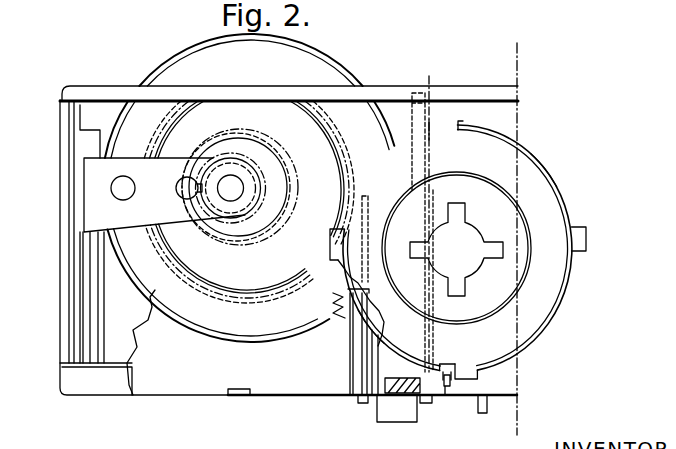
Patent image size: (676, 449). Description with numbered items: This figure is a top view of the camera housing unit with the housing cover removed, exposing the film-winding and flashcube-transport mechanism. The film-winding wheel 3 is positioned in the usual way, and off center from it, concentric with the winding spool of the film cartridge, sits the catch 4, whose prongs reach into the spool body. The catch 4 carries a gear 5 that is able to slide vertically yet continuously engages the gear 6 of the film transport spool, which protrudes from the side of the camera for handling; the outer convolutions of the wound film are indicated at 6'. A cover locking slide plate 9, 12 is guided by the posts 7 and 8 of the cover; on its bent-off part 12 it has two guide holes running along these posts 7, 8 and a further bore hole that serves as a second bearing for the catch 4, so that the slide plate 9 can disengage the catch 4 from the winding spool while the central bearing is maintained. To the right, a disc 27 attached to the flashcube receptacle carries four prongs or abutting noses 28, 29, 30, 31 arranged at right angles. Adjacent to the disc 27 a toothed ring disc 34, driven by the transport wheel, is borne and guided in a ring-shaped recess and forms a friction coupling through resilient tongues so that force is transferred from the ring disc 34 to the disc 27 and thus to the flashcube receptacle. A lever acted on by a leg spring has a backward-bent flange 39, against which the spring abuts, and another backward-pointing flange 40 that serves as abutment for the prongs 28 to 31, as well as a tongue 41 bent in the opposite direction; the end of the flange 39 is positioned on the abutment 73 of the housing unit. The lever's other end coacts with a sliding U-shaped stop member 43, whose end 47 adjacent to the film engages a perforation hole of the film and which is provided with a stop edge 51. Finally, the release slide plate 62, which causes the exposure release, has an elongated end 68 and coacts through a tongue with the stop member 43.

The film-winding wheel 3 is at (205, 62).
The catch 4 is at (232, 177).
The gear 5 is at (259, 184).
The gear 6 is at (240, 179).
The tape pack outer convolution 6' is at (239, 209).
The post 7 is at (182, 186).
The post 8 is at (123, 194).
The cover locking slide plate 9 is at (91, 252).
The bent-off part 12 is at (102, 208).
The disc 27 is at (494, 163).
The prong 28 is at (577, 236).
The prong 29 is at (495, 373).
The prong 30 is at (362, 312).
The prong 31 is at (442, 125).
The toothed ring disc 34 is at (540, 160).
The flange 39 is at (420, 386).
The flange 40 is at (447, 380).
The tongue 41 is at (483, 413).
The stop member 43 is at (382, 357).
The end 47 is at (418, 88).
The stop edge 51 is at (446, 365).
The release slide plate 62 is at (247, 388).
The elongated end 68 is at (507, 407).
The abutment 73 is at (397, 390).